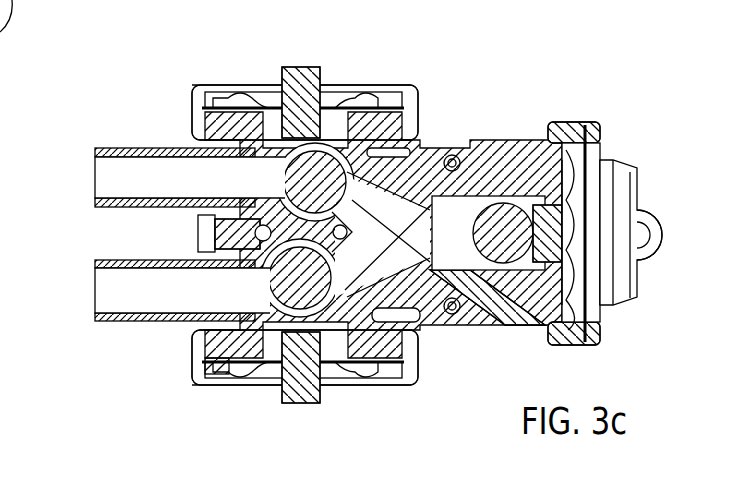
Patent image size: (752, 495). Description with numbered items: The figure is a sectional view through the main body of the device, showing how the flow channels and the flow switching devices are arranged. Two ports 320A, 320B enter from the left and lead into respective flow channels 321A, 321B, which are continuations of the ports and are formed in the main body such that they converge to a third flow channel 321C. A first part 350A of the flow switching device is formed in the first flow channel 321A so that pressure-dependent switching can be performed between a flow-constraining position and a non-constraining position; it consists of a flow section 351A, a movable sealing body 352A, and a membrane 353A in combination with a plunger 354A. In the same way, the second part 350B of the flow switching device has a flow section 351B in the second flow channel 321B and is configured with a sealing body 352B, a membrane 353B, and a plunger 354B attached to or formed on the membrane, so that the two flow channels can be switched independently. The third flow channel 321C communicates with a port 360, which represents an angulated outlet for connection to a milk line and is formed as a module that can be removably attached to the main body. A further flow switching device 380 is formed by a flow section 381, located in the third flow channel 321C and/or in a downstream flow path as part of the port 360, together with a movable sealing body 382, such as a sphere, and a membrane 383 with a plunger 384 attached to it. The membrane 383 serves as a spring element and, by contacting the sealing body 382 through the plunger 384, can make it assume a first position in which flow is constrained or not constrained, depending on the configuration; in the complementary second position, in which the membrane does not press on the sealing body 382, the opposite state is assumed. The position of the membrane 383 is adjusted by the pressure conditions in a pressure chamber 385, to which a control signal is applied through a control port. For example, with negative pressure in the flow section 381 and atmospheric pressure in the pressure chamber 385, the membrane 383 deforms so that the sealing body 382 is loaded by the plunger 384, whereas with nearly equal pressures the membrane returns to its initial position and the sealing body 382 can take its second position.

The port 320B is at (154, 149).
The flow channel 321B is at (112, 178).
The port 320A is at (146, 307).
The flow channel 321A is at (112, 290).
The flow channel 321C is at (447, 252).
The second part of the flow switching device 350B is at (427, 96).
The first part of the flow switching device 350A is at (329, 391).
The flow section 351B is at (348, 172).
The flow section 351A is at (268, 277).
The movable sealing body 352B is at (290, 182).
The movable sealing body 352A is at (193, 362).
The membrane 353B is at (235, 95).
The membrane 353A is at (232, 378).
The plunger 354B is at (312, 86).
The plunger 354A is at (312, 348).
The port 360 is at (629, 201).
The second flow switching device 380 is at (668, 242).
The flow section 381 is at (560, 263).
The movable sealing body 382 is at (600, 233).
The membrane 383 is at (586, 185).
The plunger 384 is at (572, 210).
The pressure chamber 385 is at (620, 287).